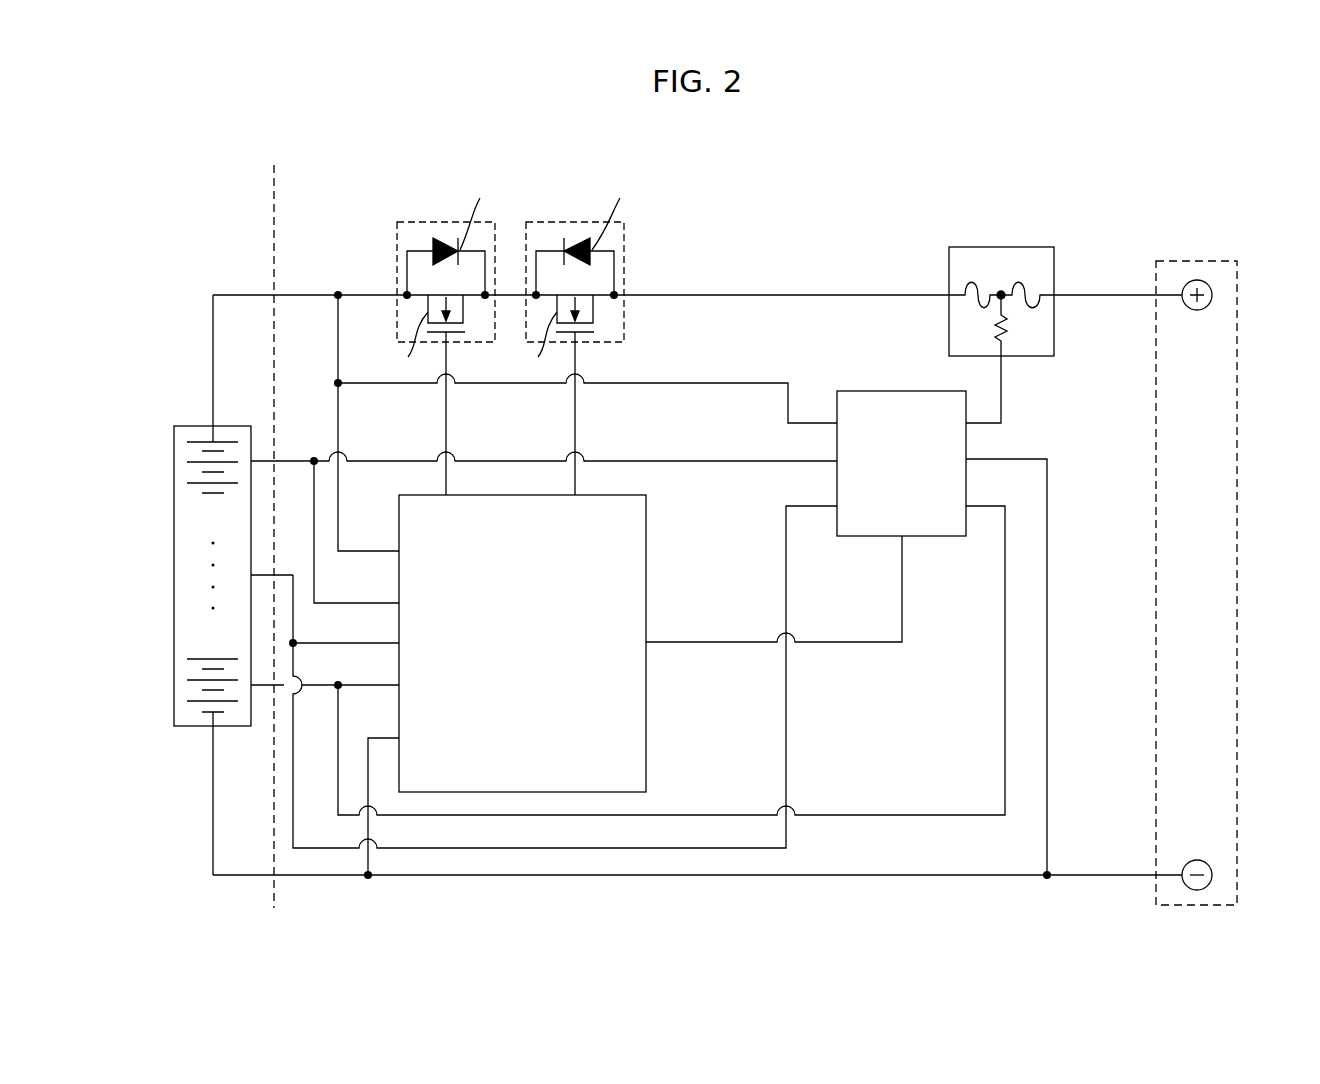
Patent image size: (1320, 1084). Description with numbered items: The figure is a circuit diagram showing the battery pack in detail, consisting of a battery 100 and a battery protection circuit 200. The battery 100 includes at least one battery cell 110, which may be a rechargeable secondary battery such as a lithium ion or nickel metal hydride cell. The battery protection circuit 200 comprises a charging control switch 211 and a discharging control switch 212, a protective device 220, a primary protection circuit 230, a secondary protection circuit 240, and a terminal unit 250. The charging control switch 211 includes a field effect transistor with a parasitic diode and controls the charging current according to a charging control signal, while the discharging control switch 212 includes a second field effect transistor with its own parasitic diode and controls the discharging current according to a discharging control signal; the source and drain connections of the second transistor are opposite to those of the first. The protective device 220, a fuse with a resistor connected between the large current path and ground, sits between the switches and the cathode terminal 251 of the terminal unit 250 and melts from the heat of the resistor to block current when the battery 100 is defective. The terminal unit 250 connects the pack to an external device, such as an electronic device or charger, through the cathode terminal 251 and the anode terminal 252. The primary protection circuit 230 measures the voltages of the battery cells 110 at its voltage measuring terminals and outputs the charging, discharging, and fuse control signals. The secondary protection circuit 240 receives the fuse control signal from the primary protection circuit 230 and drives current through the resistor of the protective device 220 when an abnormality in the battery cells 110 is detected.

The battery 100 is at (190, 426).
The battery cell 110 is at (190, 447).
The battery protection circuit 200 is at (1262, 166).
The charging control switch 211 is at (432, 222).
The discharging control switch 212 is at (561, 222).
The protective device 220 is at (1012, 247).
The primary protection circuit 230 is at (646, 538).
The secondary protection circuit 240 is at (897, 391).
The terminal unit 250 is at (1237, 275).
The cathode terminal 251 is at (1211, 297).
The anode terminal 252 is at (1212, 872).